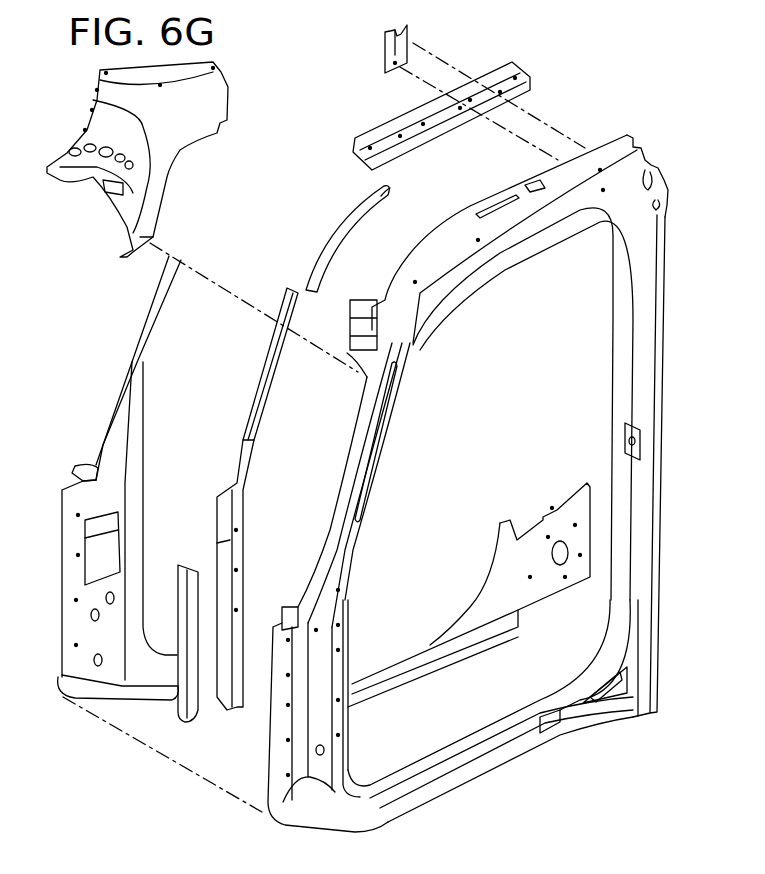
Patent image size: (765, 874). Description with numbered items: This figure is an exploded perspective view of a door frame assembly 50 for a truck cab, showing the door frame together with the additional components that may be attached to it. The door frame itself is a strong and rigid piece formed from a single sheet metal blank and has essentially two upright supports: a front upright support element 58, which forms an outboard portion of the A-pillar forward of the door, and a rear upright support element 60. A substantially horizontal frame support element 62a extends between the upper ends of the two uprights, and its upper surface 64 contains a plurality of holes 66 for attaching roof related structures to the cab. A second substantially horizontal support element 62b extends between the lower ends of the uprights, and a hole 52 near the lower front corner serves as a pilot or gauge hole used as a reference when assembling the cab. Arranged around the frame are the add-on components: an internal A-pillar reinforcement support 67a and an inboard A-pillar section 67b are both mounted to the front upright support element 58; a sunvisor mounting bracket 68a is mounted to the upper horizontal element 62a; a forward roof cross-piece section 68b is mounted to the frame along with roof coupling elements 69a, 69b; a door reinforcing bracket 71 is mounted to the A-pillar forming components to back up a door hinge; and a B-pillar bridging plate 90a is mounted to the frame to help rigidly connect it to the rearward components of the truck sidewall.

The door frame assembly 50 is at (633, 121).
The hole 52 is at (328, 756).
The front upright support element 58 is at (330, 498).
The rear upright support element 60 is at (635, 405).
The horizontal frame support element 62a is at (497, 263).
The horizontal support element 62b is at (468, 770).
The upper surface 64 is at (503, 196).
The holes 66 is at (533, 185).
The internal A-pillar reinforcement support 67a is at (247, 432).
The inboard A-pillar section 67b is at (108, 430).
The sunvisor mounting bracket 68a is at (343, 228).
The forward roof cross-piece section 68b is at (172, 176).
The roof coupling element 69a is at (365, 135).
The roof coupling element 69b is at (386, 60).
The door reinforcing bracket 71 is at (173, 680).
The B-pillar bridging plate 90a is at (563, 522).